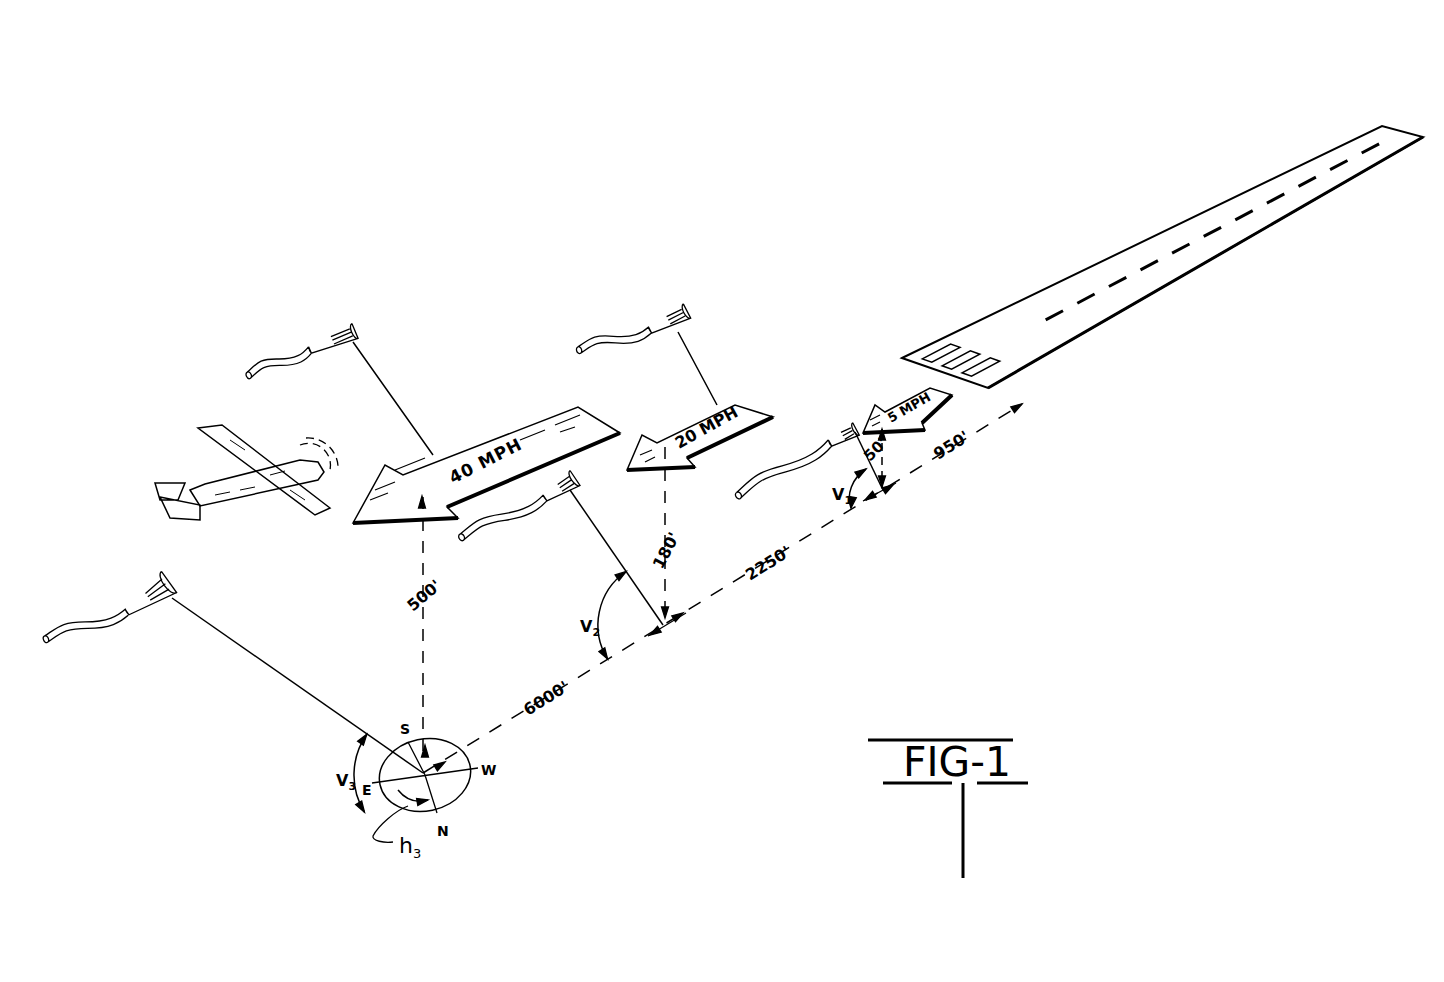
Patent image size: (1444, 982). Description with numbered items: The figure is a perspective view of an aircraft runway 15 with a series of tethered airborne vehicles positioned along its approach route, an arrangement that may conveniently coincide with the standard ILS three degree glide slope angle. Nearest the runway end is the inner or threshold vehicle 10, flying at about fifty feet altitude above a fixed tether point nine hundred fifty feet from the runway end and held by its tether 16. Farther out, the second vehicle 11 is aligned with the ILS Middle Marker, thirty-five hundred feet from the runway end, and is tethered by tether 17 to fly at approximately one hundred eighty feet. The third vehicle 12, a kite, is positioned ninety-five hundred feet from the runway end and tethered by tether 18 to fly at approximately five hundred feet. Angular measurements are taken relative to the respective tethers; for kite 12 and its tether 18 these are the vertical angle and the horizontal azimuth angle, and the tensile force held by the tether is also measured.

The inner or threshold vehicle 10 is at (676, 312).
The second vehicle 11 is at (332, 336).
The third vehicle 12 is at (147, 583).
The aircraft runway 15 is at (1170, 283).
The tether 16 is at (865, 474).
The tether 17 is at (609, 557).
The tether 18 is at (325, 703).